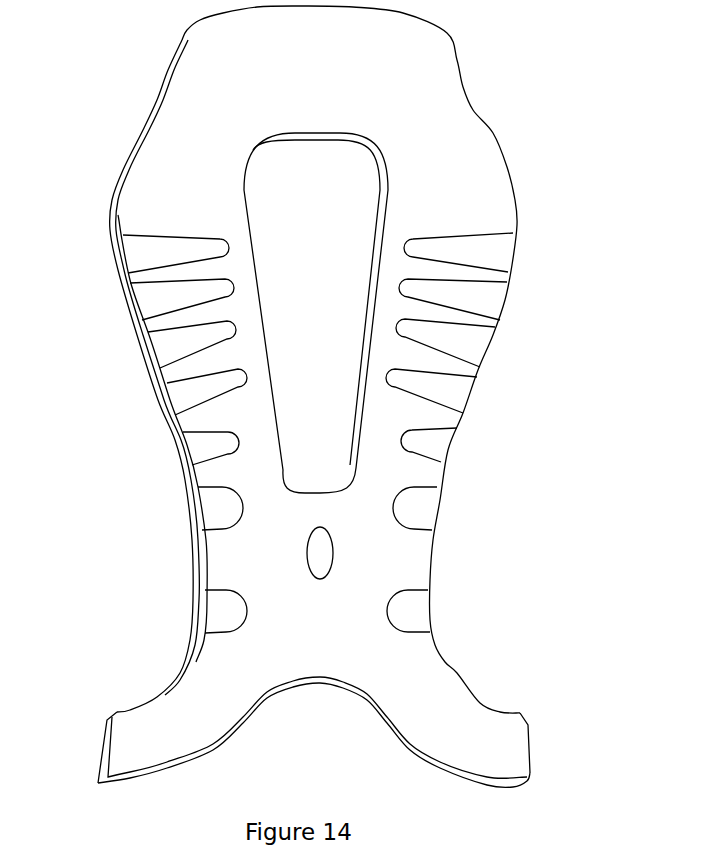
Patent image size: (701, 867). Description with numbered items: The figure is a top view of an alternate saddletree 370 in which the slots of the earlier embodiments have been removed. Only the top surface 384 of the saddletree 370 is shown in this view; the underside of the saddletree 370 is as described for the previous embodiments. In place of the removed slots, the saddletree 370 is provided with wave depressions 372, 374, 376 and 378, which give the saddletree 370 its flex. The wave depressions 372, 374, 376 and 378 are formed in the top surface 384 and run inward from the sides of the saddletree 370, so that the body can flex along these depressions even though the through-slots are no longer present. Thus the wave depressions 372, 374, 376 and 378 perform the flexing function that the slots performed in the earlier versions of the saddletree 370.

The saddletree 370 is at (610, 294).
The wave depression 372 is at (435, 508).
The wave depression 374 is at (460, 402).
The wave depression 376 is at (480, 356).
The wave depression 378 is at (493, 302).
The top surface 384 is at (351, 359).